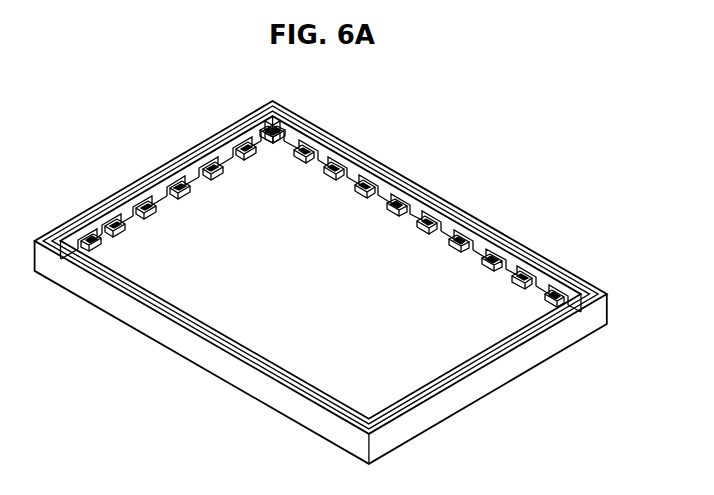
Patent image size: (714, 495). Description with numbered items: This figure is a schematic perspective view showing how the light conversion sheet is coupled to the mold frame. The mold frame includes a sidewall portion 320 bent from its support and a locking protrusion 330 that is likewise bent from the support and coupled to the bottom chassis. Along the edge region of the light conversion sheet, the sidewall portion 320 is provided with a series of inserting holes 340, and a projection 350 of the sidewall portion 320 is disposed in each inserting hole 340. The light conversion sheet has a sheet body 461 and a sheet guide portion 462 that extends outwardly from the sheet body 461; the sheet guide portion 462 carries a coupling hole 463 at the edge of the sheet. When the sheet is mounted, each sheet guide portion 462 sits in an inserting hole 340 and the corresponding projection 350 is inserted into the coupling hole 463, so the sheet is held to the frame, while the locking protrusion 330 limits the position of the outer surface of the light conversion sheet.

The sidewall portion 320 is at (392, 197).
The locking protrusion 330 is at (427, 200).
The inserting hole 340 is at (138, 217).
The projection 350 is at (452, 228).
The sheet body 461 is at (180, 190).
The sheet guide portion 462 is at (140, 206).
The coupling hole 463 is at (188, 198).